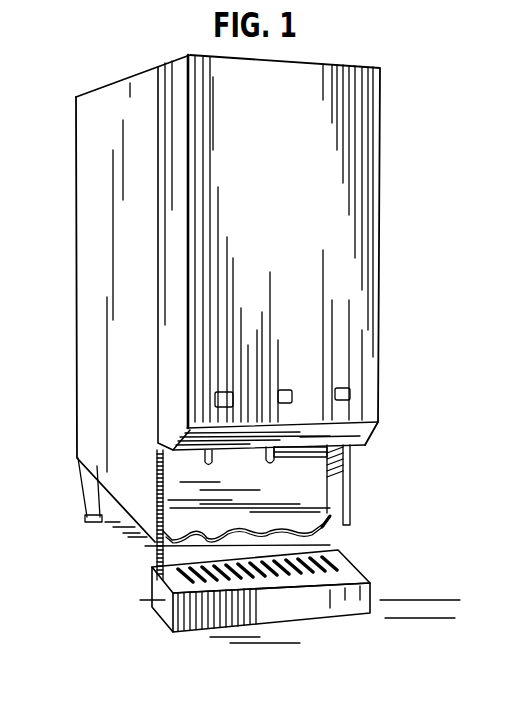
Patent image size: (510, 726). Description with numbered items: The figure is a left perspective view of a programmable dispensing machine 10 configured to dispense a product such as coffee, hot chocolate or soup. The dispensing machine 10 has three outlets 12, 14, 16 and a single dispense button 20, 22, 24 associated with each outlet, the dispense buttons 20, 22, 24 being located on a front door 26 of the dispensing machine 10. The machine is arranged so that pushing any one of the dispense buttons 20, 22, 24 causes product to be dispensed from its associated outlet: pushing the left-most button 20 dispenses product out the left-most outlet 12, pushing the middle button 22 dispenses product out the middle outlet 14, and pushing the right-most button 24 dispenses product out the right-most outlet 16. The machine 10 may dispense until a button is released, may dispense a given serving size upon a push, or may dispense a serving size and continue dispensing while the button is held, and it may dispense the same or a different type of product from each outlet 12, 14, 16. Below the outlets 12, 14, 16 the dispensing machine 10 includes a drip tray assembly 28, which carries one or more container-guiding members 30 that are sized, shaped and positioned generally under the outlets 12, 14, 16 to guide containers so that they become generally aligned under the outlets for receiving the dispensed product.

The dispensing machine 10 is at (398, 106).
The left-most outlet 12 is at (207, 458).
The middle outlet 14 is at (270, 463).
The right-most outlet 16 is at (350, 455).
The left-most dispense button 20 is at (228, 392).
The middle dispense button 22 is at (293, 393).
The right-most dispense button 24 is at (350, 396).
The front door 26 is at (352, 248).
The drip tray assembly 28 is at (193, 633).
The container-guiding member 30 is at (193, 541).